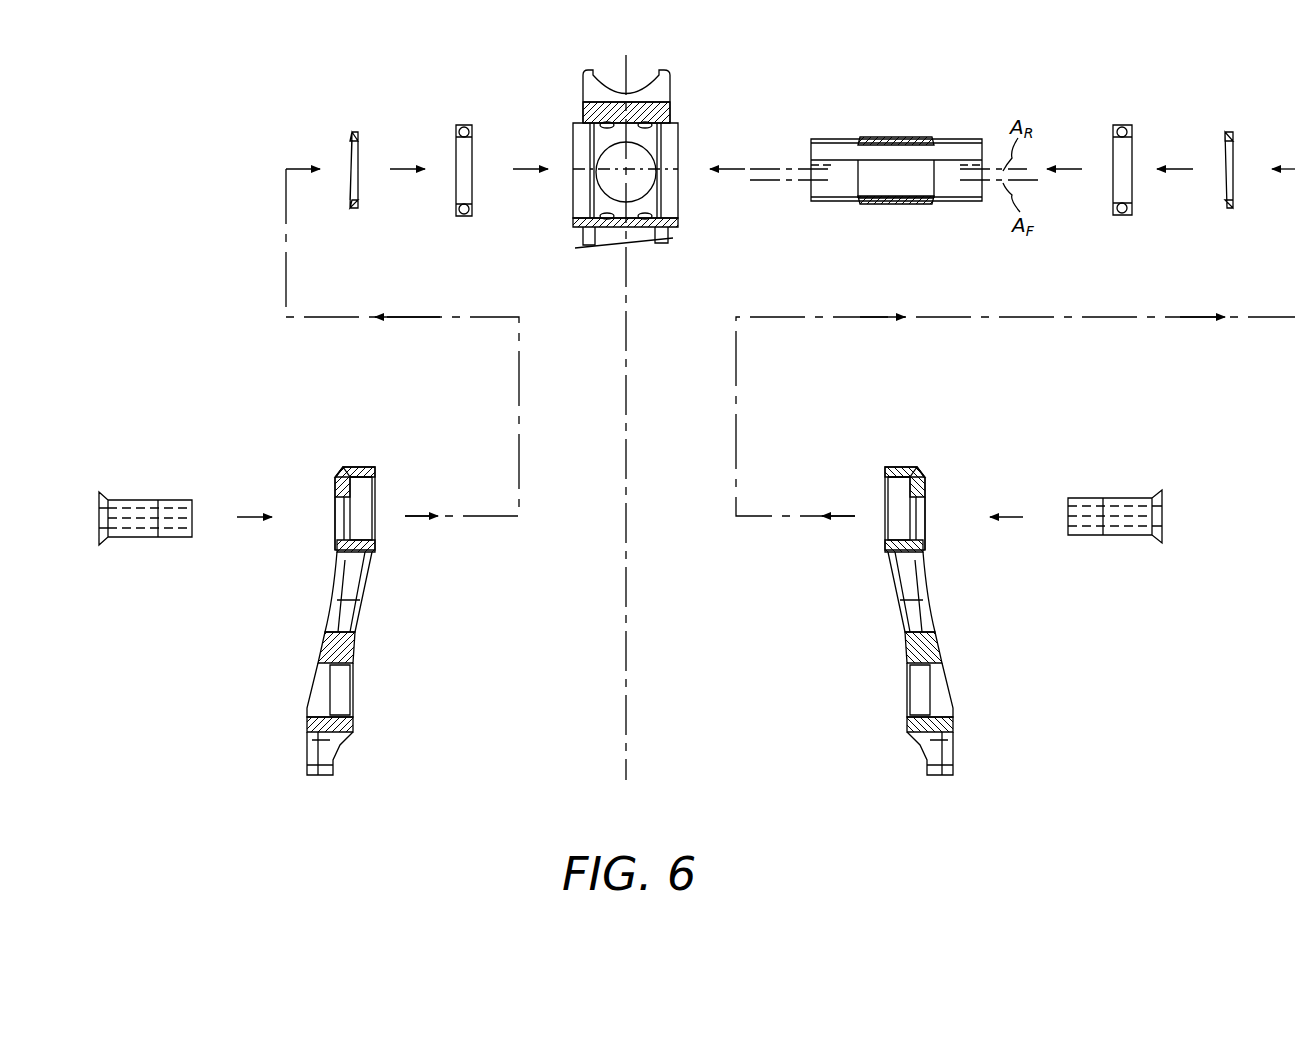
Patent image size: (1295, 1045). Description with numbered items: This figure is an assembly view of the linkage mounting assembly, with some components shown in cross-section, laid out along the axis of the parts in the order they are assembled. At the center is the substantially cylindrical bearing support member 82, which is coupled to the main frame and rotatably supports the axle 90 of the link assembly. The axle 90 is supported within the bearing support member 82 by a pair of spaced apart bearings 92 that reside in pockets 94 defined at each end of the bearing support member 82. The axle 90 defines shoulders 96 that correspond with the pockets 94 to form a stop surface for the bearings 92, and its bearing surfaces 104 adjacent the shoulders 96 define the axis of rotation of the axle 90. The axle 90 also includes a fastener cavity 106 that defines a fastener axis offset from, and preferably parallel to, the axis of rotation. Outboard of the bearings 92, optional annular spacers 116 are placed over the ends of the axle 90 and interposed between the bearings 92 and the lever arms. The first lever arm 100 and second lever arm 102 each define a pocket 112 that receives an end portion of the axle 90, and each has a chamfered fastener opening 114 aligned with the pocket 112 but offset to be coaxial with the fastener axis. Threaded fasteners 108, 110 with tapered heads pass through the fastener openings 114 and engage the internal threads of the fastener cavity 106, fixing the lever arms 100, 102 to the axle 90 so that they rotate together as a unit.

The bearing support member 82 is at (633, 100).
The axle 90 is at (836, 208).
The bearings 92 is at (463, 217).
The pockets 94 is at (590, 147).
The shoulders 96 is at (862, 140).
The first lever arm 100 is at (918, 470).
The second lever arm 102 is at (345, 470).
The bearing surfaces 104 is at (858, 203).
The fastener cavity 106 is at (812, 170).
The fastener 108 is at (1088, 497).
The fastener 110 is at (142, 497).
The pocket 112 is at (375, 492).
The fastener openings 114 is at (343, 506).
The annular spacers 116 is at (355, 130).